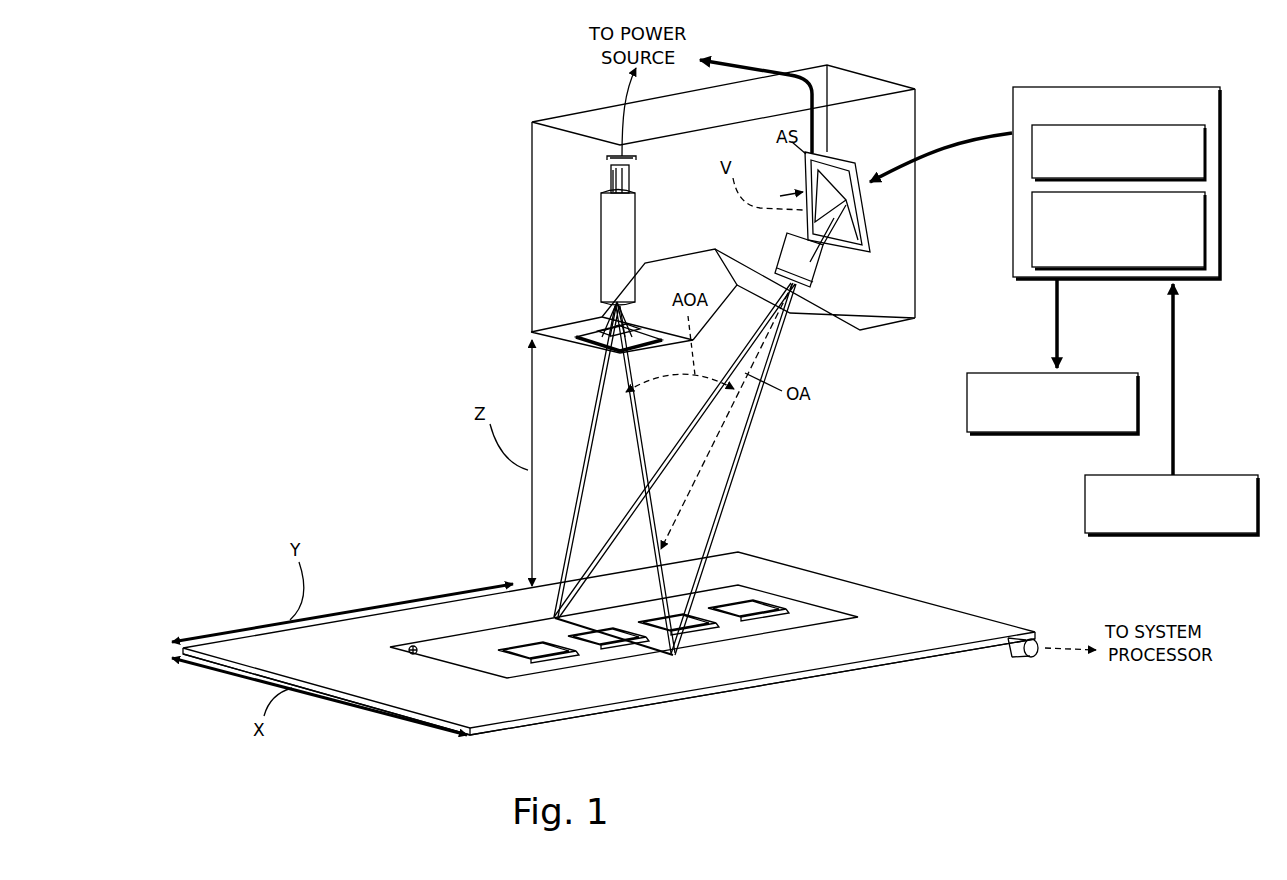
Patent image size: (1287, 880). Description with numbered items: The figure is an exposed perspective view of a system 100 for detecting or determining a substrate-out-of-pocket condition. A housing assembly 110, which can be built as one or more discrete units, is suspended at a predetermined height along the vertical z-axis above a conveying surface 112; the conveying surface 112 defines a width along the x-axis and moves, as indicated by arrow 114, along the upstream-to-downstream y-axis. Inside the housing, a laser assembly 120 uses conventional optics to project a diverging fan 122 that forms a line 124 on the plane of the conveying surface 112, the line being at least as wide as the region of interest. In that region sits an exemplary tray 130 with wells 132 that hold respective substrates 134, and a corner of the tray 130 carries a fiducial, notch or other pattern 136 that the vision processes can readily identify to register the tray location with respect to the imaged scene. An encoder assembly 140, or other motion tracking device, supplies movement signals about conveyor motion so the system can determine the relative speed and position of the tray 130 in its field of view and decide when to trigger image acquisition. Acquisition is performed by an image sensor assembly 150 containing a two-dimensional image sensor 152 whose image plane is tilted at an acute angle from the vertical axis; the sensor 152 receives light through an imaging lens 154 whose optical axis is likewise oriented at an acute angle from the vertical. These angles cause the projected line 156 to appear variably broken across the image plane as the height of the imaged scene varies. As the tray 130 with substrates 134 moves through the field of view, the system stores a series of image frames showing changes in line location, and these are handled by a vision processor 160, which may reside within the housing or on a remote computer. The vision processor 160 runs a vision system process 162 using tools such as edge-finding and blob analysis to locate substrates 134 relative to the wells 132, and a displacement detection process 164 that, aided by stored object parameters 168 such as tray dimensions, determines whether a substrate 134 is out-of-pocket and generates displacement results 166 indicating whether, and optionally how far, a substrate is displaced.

The system 100 is at (879, 54).
The housing assembly 110 is at (599, 120).
The conveying surface 112 is at (835, 580).
The conveyor motion arrow 114 is at (540, 727).
The laser assembly 120 is at (607, 233).
The fan 122 is at (700, 546).
The line 124 is at (641, 655).
The tray 130 is at (692, 651).
The wells 132 is at (498, 647).
The substrates 134 is at (520, 643).
The fiducial 136 is at (408, 647).
The encoder assembly 140 is at (1020, 660).
The image sensor assembly 150 is at (842, 186).
The image sensor 152 is at (870, 230).
The imaging lens 154 is at (808, 262).
The line 156 is at (813, 240).
The vision processor 160 is at (1142, 163).
The vision system process 162 is at (1208, 148).
The displacement detection process 164 is at (1210, 225).
The displacement results 166 is at (967, 412).
The object parameters 168 is at (1085, 512).